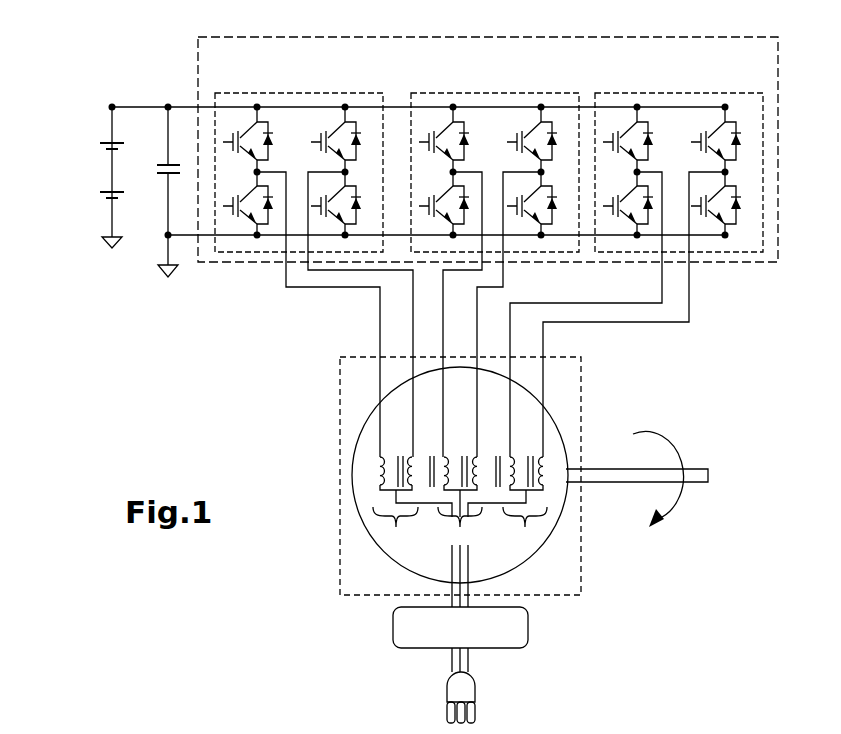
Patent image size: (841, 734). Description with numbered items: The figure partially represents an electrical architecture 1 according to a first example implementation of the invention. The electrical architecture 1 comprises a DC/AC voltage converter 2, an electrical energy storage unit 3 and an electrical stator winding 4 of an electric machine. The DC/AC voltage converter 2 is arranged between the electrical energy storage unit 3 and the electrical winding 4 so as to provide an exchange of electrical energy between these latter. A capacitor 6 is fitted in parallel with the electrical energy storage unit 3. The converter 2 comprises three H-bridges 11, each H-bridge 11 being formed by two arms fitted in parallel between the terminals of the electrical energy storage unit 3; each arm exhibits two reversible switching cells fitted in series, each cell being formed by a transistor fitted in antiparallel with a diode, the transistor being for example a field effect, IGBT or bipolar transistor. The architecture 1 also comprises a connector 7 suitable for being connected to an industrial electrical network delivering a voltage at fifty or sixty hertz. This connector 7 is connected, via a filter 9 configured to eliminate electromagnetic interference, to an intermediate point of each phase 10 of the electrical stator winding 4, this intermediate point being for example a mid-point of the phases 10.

The electrical architecture 1 is at (207, 337).
The DC/AC voltage converter 2 is at (778, 62).
The electrical energy storage unit 3 is at (88, 127).
The electrical stator winding 4 is at (328, 452).
The capacitor 6 is at (168, 175).
The connector 7 is at (447, 686).
The filter 9 is at (393, 623).
The phase 10 is at (397, 529).
The H-bridge 11 is at (270, 92).